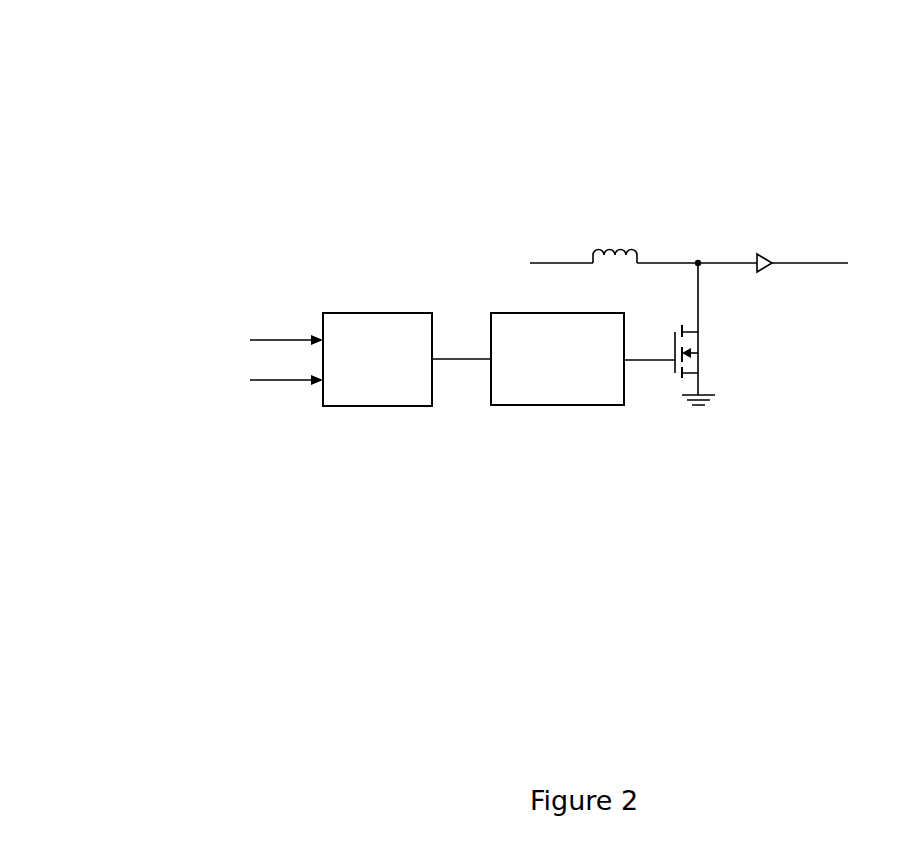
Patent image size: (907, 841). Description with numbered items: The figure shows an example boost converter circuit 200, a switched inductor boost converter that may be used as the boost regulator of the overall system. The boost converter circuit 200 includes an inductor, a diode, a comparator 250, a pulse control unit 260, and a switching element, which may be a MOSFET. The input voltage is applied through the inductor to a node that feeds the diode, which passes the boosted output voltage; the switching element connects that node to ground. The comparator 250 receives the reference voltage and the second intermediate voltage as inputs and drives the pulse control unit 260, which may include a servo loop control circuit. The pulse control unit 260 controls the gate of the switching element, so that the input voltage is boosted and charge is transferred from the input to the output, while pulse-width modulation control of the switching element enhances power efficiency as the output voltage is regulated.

The boost converter circuit 200 is at (88, 49).
The comparator 250 is at (372, 313).
The pulse control unit 260 is at (557, 313).